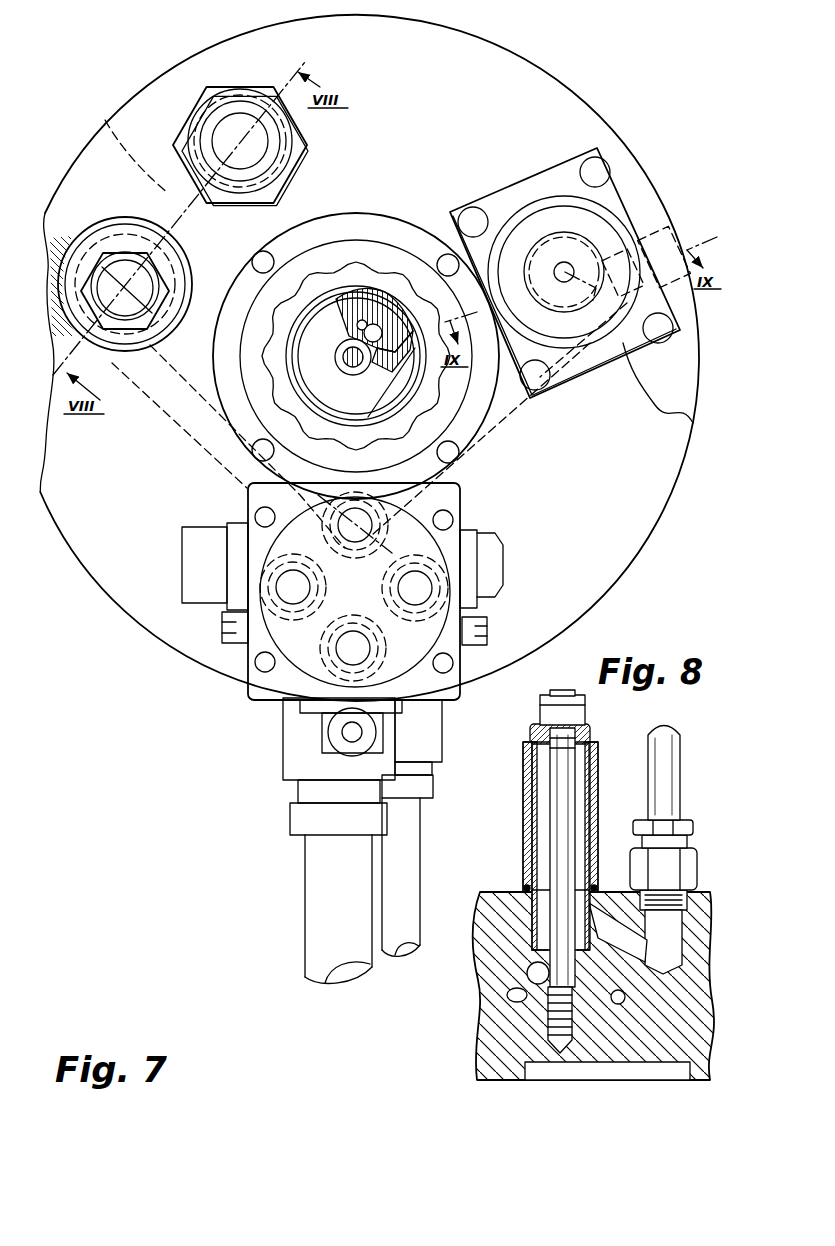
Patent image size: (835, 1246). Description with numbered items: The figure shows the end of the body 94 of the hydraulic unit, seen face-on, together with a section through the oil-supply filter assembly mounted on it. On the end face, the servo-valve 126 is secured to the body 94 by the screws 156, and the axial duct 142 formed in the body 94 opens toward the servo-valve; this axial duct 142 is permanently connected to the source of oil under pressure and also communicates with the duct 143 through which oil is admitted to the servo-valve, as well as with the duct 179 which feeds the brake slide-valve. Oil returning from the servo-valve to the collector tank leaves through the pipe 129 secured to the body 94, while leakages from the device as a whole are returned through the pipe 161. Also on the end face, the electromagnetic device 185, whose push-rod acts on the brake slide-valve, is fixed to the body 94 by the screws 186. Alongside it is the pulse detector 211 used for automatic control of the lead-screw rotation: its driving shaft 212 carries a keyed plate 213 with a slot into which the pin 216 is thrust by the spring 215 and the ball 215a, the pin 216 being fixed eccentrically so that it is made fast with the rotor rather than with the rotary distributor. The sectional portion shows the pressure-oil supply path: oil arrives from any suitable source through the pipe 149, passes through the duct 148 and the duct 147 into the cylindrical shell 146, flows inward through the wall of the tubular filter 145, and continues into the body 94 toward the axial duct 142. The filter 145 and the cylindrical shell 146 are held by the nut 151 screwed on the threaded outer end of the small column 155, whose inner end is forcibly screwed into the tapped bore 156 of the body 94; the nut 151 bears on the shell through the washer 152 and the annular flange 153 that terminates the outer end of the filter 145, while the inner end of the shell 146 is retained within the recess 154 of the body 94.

In FIG. 7, the body of the hydraulic unit 94 is at (508, 72).
In FIG. 8, the body of the hydraulic unit 94 is at (495, 935).
In FIG. 7, the servo-valve 126 is at (258, 705).
In FIG. 7, the pipe 129 is at (312, 862).
In FIG. 7, the axial duct 142 is at (358, 492).
In FIG. 7, the duct 143 is at (158, 405).
In FIG. 8, the duct 143 is at (528, 968).
In FIG. 8, the tubular filter 145 is at (545, 813).
In FIG. 7, the cylindrical shell 146 is at (97, 224).
In FIG. 8, the cylindrical shell 146 is at (525, 793).
In FIG. 7, the duct 147 is at (119, 149).
In FIG. 8, the duct 147 is at (615, 890).
In FIG. 8, the duct 148 is at (703, 890).
In FIG. 7, the pipe 149 is at (216, 130).
In FIG. 8, the pipe 149 is at (677, 768).
In FIG. 7, the nut 151 is at (160, 285).
In FIG. 8, the nut 151 is at (542, 708).
In FIG. 8, the washer 152 is at (587, 725).
In FIG. 7, the annular flange 153 is at (153, 288).
In FIG. 8, the annular flange 153 is at (592, 737).
In FIG. 8, the recess 154 is at (523, 888).
In FIG. 7, the small column 155 is at (167, 328).
In FIG. 8, the small column 155 is at (562, 810).
In FIG. 7, the screws 156 is at (255, 515).
In FIG. 8, the screws 156 is at (545, 1013).
In FIG. 7, the pipe 161 is at (408, 860).
In FIG. 7, the duct 179 is at (503, 425).
In FIG. 7, the electromagnetic device 185 is at (690, 422).
In FIG. 7, the screws 186 is at (543, 385).
In FIG. 7, the pulse detector 211 is at (342, 252).
In FIG. 7, the driving shaft 212 is at (360, 363).
In FIG. 7, the plate 213 is at (373, 302).
In FIG. 7, the spring 215 is at (400, 313).
In FIG. 7, the ball 215a is at (392, 310).
In FIG. 7, the pin 216 is at (340, 302).